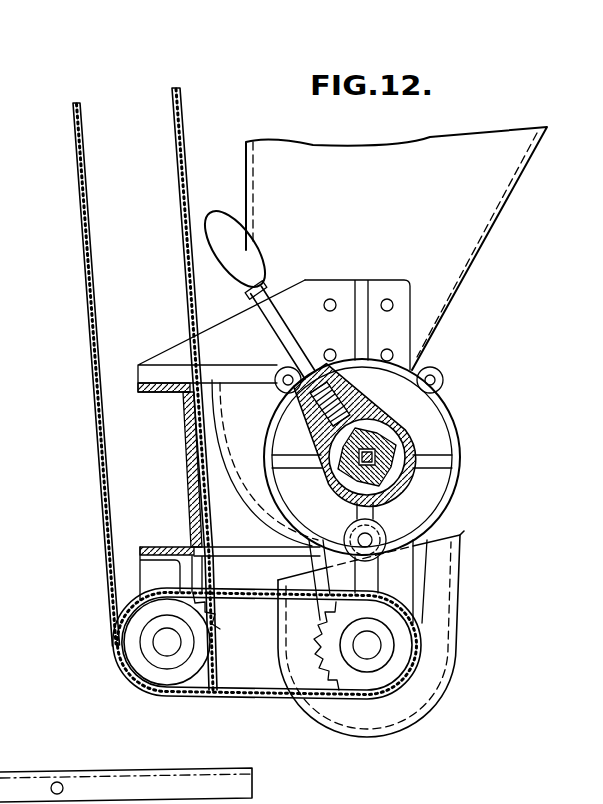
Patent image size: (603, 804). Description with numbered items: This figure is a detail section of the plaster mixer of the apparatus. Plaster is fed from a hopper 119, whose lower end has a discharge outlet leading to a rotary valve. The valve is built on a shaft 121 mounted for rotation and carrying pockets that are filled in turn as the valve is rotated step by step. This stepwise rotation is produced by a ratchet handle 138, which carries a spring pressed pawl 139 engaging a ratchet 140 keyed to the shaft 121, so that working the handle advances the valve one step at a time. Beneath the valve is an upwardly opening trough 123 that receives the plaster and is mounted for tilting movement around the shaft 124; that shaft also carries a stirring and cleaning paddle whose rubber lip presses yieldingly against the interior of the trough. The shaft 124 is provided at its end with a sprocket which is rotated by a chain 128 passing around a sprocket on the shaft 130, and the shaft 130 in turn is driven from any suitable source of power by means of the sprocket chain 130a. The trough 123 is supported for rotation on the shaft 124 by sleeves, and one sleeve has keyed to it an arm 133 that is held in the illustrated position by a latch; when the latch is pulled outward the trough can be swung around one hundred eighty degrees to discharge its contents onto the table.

The hopper 119 is at (499, 219).
The ratchet handle 138 is at (279, 328).
The shaft 121 is at (403, 440).
The spring pressed pawl 139 is at (373, 437).
The ratchet 140 is at (373, 480).
The arm 133 is at (370, 582).
The trough 123 is at (456, 578).
The shaft 124 is at (375, 648).
The shaft 130 is at (158, 648).
The sprocket chain 130a is at (96, 431).
The chain 128 is at (243, 693).